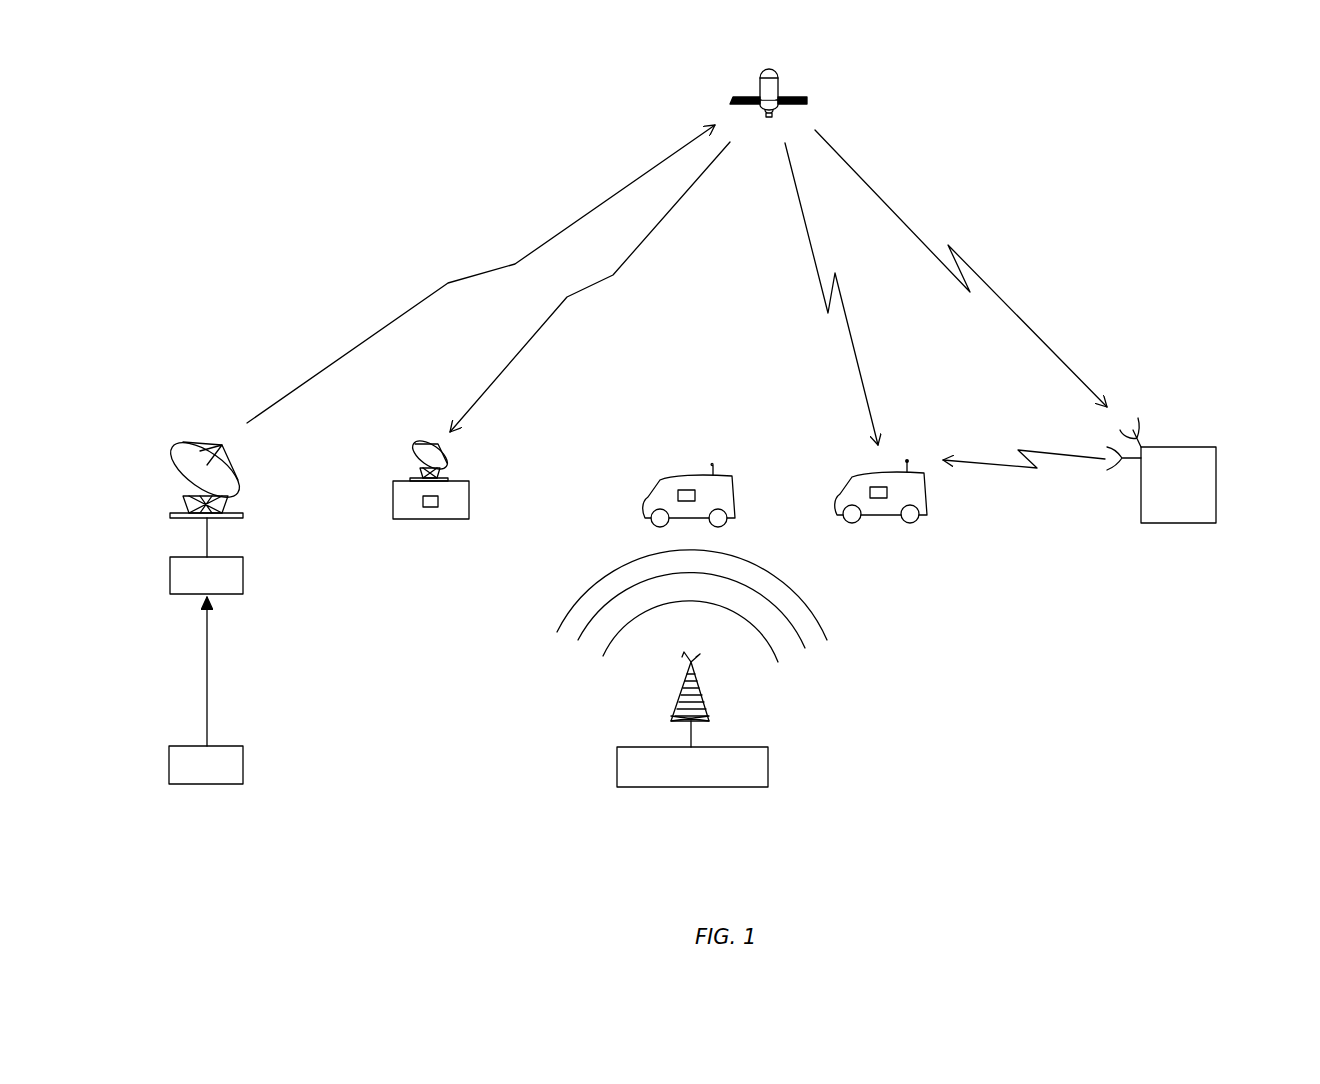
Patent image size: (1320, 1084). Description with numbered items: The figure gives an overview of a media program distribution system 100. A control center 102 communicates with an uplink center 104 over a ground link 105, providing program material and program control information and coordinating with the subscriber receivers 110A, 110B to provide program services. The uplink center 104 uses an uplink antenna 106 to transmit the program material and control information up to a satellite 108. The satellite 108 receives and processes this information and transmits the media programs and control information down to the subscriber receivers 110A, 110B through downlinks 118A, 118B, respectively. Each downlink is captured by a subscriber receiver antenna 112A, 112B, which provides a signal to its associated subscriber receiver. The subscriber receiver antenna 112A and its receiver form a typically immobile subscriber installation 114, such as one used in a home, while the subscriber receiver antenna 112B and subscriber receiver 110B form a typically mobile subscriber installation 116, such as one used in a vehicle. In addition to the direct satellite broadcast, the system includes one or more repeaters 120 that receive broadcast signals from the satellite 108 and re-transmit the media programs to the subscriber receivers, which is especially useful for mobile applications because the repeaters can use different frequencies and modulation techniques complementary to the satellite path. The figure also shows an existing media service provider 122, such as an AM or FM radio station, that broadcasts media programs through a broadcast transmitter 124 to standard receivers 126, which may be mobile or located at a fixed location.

The media program distribution system 100 is at (1118, 257).
The control center 102 is at (228, 745).
The uplink center 104 is at (245, 577).
The ground link 105 is at (207, 670).
The uplink antenna 106 is at (187, 442).
The satellite 108 is at (797, 95).
The subscriber receiver 110A is at (430, 507).
The subscriber receiver 110B is at (877, 500).
The subscriber receiver antenna 112A is at (418, 462).
The subscriber receiver antenna 112B is at (908, 467).
The immobile subscriber installation 114 is at (468, 488).
The mobile subscriber installation 116 is at (930, 505).
The downlink 118A is at (623, 238).
The downlink 118B is at (812, 263).
The repeater 120 is at (1218, 483).
The existing media service provider 122 is at (622, 745).
The broadcast transmitter 124 is at (705, 712).
The standard receiver 126 is at (672, 492).